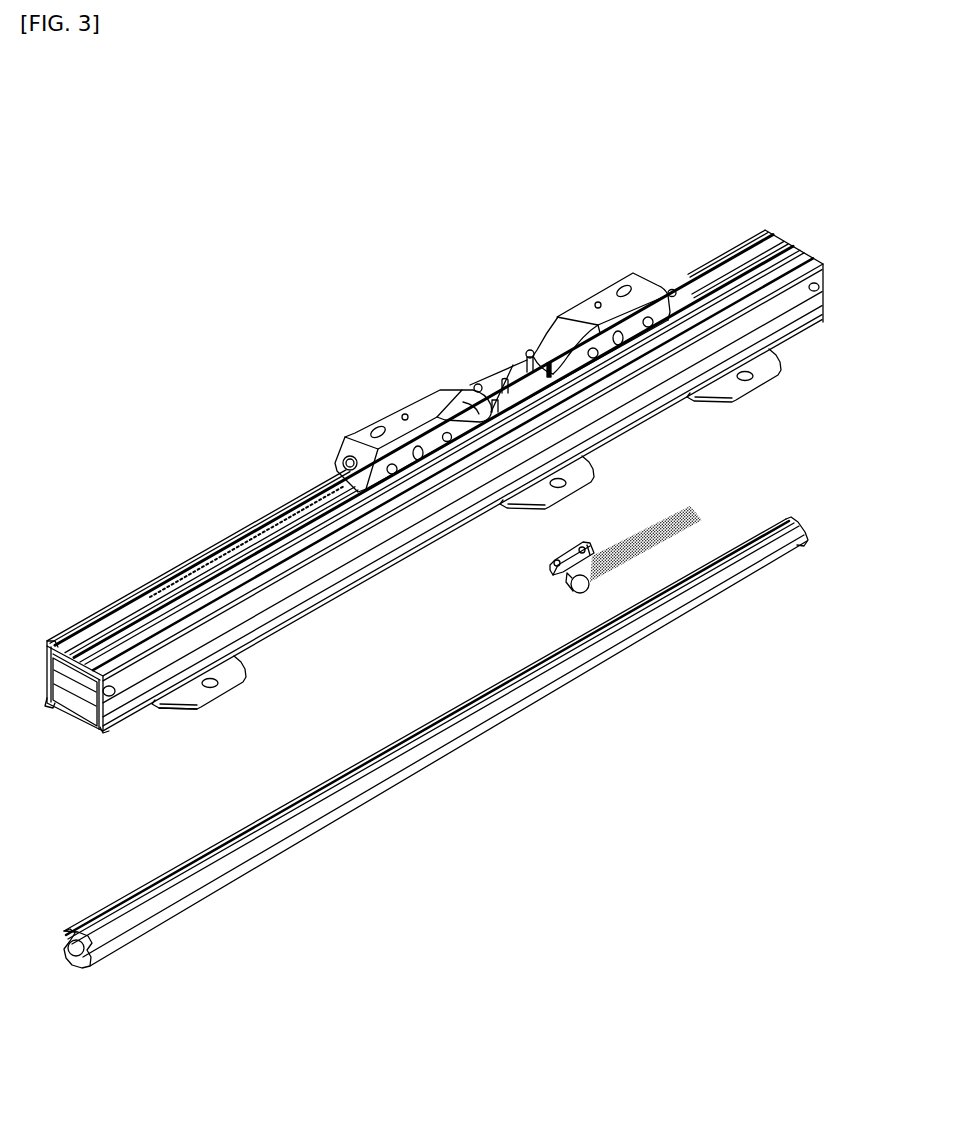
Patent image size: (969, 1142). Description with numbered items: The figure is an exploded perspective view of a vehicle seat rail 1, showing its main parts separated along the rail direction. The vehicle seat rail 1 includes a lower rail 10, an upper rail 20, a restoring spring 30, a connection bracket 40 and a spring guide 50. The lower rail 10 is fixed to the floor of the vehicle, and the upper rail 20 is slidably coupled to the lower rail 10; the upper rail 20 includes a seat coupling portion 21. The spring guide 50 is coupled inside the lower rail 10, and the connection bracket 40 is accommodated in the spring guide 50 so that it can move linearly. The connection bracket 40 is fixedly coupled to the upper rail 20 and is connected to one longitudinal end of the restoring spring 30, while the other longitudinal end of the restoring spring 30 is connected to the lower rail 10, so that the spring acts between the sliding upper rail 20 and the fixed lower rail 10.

The vehicle seat rail 1 is at (722, 219).
The lower rail 10 is at (156, 730).
The upper rail 20 is at (365, 395).
The seat coupling portion 21 is at (588, 310).
The restoring spring 30 is at (707, 500).
The connection bracket 40 is at (555, 593).
The spring guide 50 is at (80, 902).